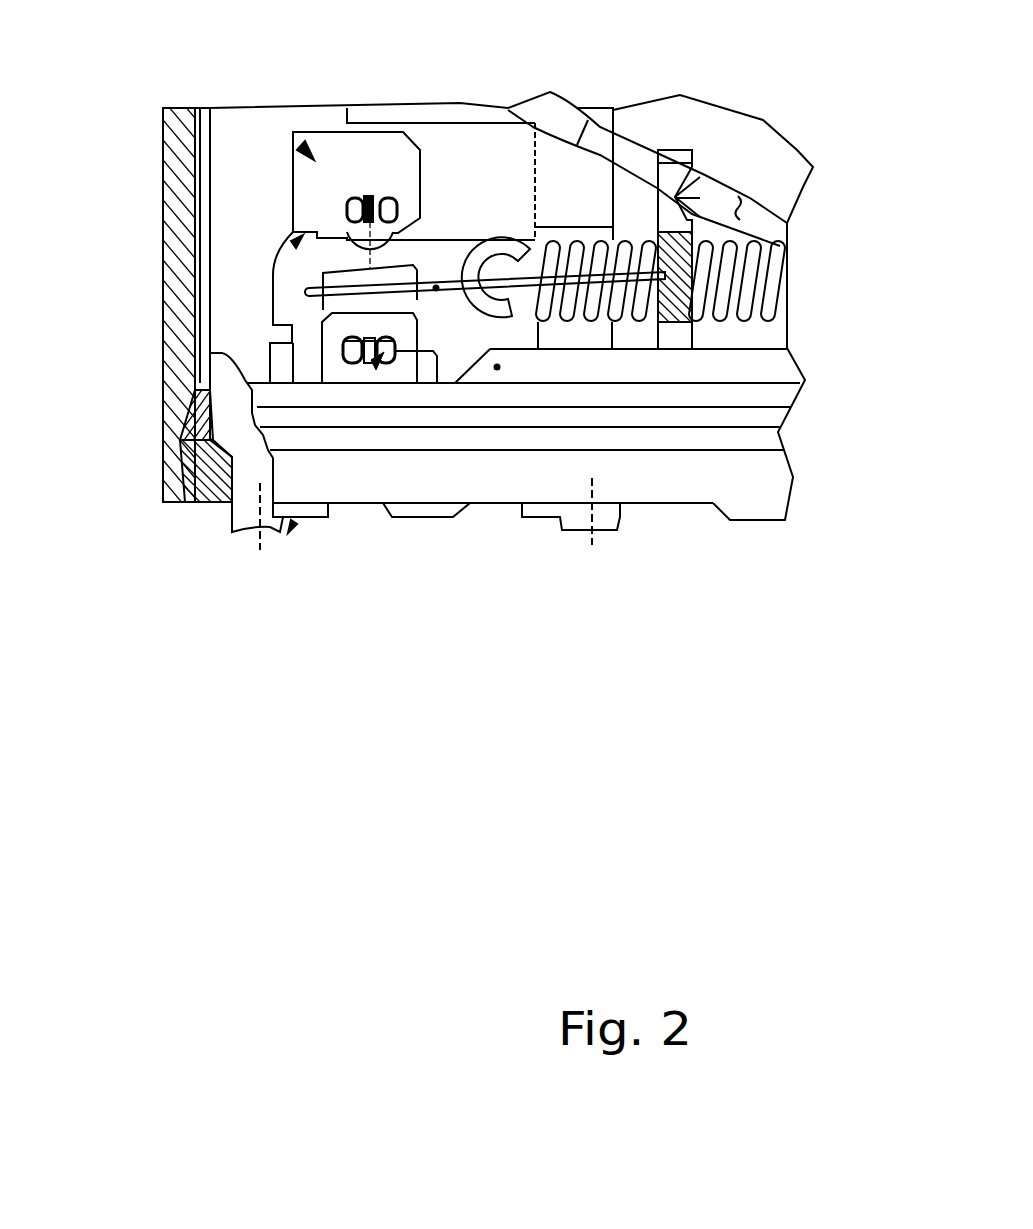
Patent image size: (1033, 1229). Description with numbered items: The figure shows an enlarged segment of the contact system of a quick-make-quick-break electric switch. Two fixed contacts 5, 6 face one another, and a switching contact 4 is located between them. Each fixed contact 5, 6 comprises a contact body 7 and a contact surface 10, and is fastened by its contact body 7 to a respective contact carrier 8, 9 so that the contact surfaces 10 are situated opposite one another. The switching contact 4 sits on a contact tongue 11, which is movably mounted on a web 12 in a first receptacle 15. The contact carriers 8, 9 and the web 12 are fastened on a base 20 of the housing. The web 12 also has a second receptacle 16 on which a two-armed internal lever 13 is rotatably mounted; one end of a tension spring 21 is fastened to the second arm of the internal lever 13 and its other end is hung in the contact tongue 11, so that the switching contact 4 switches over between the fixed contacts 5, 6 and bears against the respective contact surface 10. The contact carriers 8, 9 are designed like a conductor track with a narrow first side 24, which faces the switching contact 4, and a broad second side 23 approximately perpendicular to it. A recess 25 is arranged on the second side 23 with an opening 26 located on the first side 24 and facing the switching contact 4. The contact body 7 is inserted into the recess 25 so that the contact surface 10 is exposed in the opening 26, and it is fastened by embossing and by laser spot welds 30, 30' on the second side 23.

The switching contact 4 is at (320, 312).
The fixed contact 5 is at (366, 203).
The fixed contact 6 is at (376, 368).
The contact body 7 is at (350, 215).
The contact carrier 8 is at (303, 168).
The contact carrier 9 is at (407, 370).
The contact surface 10 is at (347, 248).
The contact tongue 11 is at (453, 292).
The web 12 is at (690, 148).
The internal lever 13 is at (557, 123).
The first receptacle 15 is at (660, 268).
The second receptacle 16 is at (643, 199).
The base 20 is at (497, 367).
The tension spring 21 is at (573, 313).
The second side 23 is at (303, 167).
The first side 24 is at (300, 238).
The recess 25 is at (347, 367).
The opening 26 is at (345, 338).
The spot weld 30 is at (239, 520).
The spot weld 30' is at (476, 570).